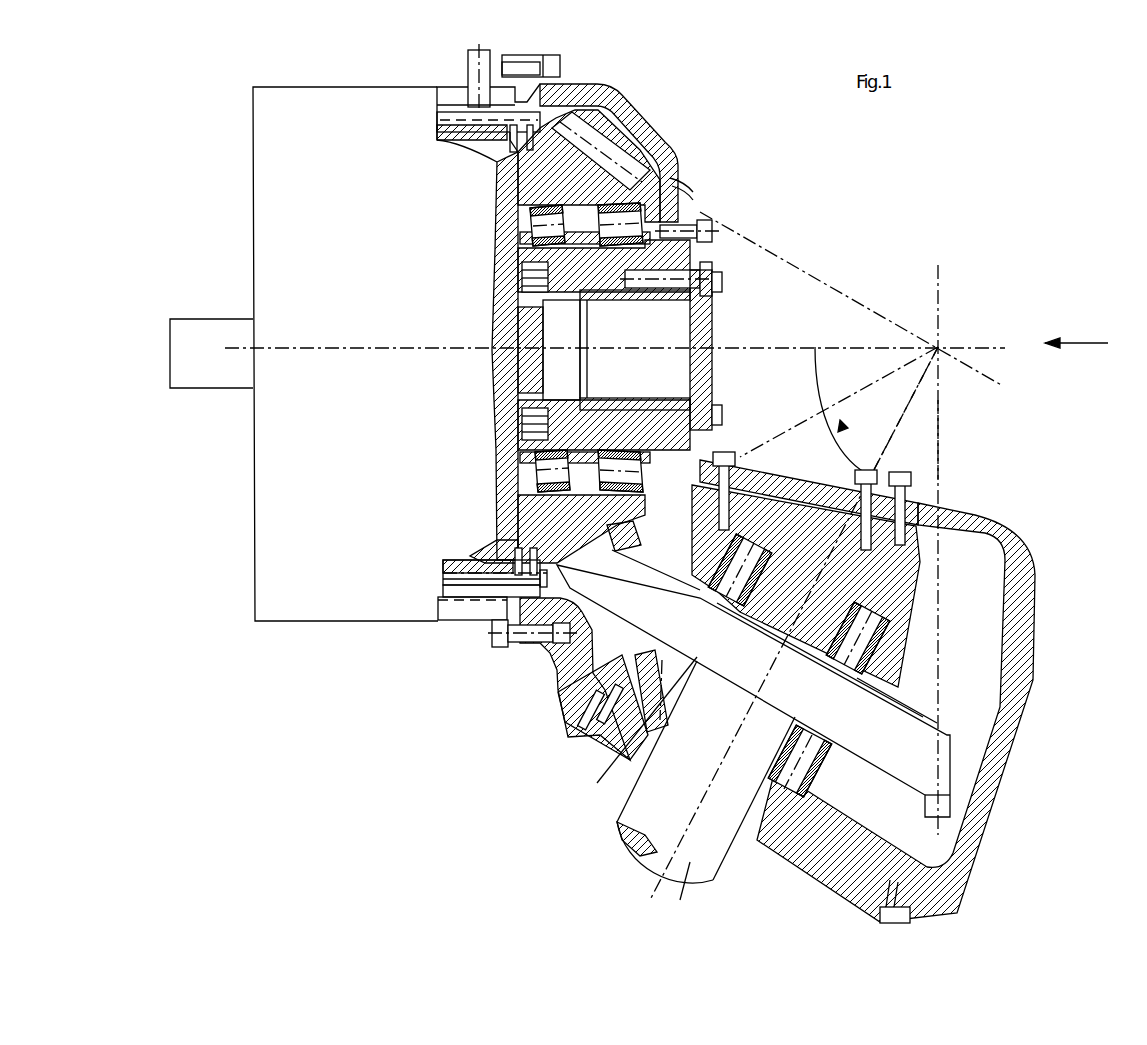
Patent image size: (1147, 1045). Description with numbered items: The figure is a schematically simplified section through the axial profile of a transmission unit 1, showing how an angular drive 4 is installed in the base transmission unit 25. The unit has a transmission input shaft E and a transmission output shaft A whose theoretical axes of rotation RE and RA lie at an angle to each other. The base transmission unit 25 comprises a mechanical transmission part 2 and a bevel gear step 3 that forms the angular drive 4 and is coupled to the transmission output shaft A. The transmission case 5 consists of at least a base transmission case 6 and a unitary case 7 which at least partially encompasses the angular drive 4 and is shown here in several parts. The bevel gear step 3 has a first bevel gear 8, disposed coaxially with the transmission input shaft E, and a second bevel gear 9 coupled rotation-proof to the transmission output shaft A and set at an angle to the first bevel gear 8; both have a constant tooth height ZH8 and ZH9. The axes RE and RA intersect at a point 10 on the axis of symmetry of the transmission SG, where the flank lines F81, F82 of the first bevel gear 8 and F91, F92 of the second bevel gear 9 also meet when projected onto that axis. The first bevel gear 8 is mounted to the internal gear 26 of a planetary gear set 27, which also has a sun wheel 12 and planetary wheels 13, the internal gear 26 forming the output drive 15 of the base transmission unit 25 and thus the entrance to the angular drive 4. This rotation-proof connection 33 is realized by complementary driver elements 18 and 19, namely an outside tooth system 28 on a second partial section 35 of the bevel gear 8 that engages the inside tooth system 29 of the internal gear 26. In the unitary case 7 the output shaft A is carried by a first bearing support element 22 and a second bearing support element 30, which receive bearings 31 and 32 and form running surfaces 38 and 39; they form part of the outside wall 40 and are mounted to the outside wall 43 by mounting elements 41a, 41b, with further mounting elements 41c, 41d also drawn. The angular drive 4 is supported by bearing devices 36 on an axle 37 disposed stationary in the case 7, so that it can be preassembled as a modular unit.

The transmission unit 1 is at (403, 78).
The mechanical transmission part 2 is at (330, 105).
The bevel gear step 3 is at (645, 177).
The angular drive 4 is at (668, 128).
The transmission case 5 is at (663, 128).
The base transmission case 6 is at (467, 608).
The unitary case 7 is at (700, 218).
The first bevel gear 8 is at (582, 130).
The second bevel gear 9 is at (949, 736).
The intersecting point 10 is at (940, 345).
The sun wheel 12 is at (493, 293).
The planetary wheels 13 is at (493, 200).
The output drive 15 is at (450, 587).
The driver element 18 is at (447, 140).
The driver element 19 is at (490, 152).
The first bearing support element 22 is at (898, 596).
The base transmission unit 25 is at (310, 305).
The internal gear 26 is at (450, 117).
The planetary gear set 27 is at (505, 537).
The outside tooth system 28 is at (565, 80).
The inside tooth system 29 is at (450, 572).
The second bearing support element 30 is at (820, 800).
The bearing 31 is at (879, 646).
The bearing 32 is at (820, 760).
The rotation-proof connection 33 is at (507, 577).
The second partial section 35 is at (497, 180).
The bearing devices 36 is at (693, 202).
The axle 37 is at (680, 315).
The running surface 38 is at (783, 470).
The running surface 39 is at (600, 757).
The outside wall 40 is at (962, 512).
The mounting element 41a is at (720, 450).
The mounting element 41b is at (910, 480).
The screw 41c is at (570, 738).
The screw 41d is at (878, 918).
The outside wall 43 is at (1040, 658).
The transmission output shaft A is at (904, 628).
The transmission input shaft E is at (210, 360).
The theoretical axis of rotation RE is at (742, 342).
The theoretical axis of rotation RA is at (727, 735).
The axis of symmetry of the transmission SG is at (800, 343).
The flank line F81 is at (863, 298).
The flank line F82 is at (845, 397).
The flank line F91 is at (902, 415).
The flank line F92 is at (940, 422).
The tooth height ZH8 is at (633, 535).
The tooth height ZH9 is at (948, 817).